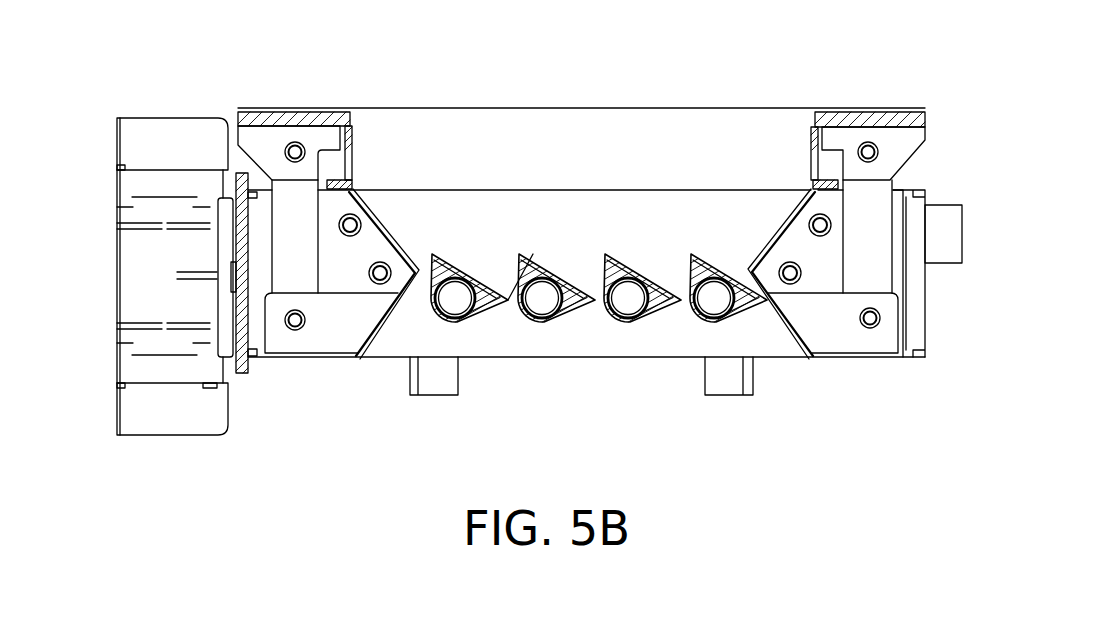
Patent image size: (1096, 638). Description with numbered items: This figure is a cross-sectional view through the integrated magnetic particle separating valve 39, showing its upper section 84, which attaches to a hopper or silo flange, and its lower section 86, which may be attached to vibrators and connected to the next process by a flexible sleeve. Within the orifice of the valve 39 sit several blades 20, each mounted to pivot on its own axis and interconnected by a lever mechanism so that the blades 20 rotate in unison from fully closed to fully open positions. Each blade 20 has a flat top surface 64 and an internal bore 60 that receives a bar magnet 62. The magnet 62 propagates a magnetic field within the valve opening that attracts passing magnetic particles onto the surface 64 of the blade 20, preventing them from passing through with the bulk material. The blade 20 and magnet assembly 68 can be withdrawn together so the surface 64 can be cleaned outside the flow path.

The blade 20 is at (522, 256).
The integrated magnetic particle separating valve 39 is at (832, 73).
The internal bore 60 is at (718, 323).
The bar magnet 62 is at (645, 285).
The blade surface 64 is at (453, 262).
The blade and magnet assembly 68 is at (511, 317).
The upper section 84 is at (913, 133).
The lower section 86 is at (885, 343).